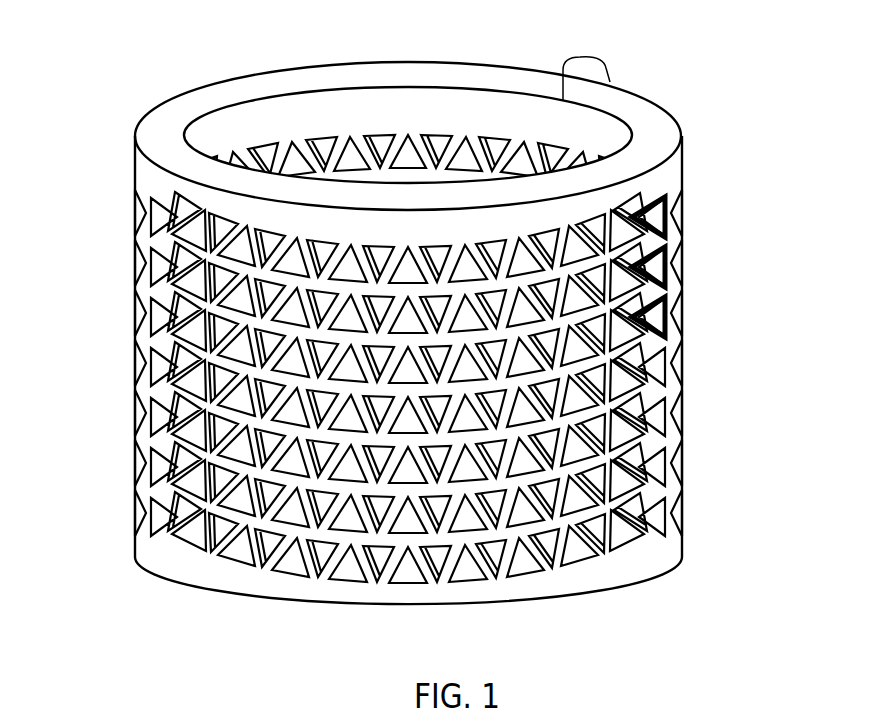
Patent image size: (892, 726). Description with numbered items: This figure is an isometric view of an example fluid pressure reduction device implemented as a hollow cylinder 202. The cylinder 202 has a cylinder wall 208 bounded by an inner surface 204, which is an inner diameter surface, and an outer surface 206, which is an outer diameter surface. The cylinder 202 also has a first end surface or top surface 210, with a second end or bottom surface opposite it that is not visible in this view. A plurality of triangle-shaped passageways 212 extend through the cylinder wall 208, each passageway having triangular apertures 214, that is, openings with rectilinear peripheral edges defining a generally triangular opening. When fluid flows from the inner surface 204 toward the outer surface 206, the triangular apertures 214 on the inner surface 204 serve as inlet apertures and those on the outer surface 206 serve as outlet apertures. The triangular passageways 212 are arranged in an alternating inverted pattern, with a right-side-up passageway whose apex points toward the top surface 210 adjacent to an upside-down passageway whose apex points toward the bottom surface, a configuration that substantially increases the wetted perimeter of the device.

The hollow cylinder 202 is at (131, 162).
The inner surface 204 is at (492, 108).
The outer surface 206 is at (672, 173).
The cylinder wall 208 is at (580, 57).
The top surface 210 is at (286, 78).
The triangle-shaped passageways 212 is at (365, 563).
The triangular apertures 214 is at (664, 214).